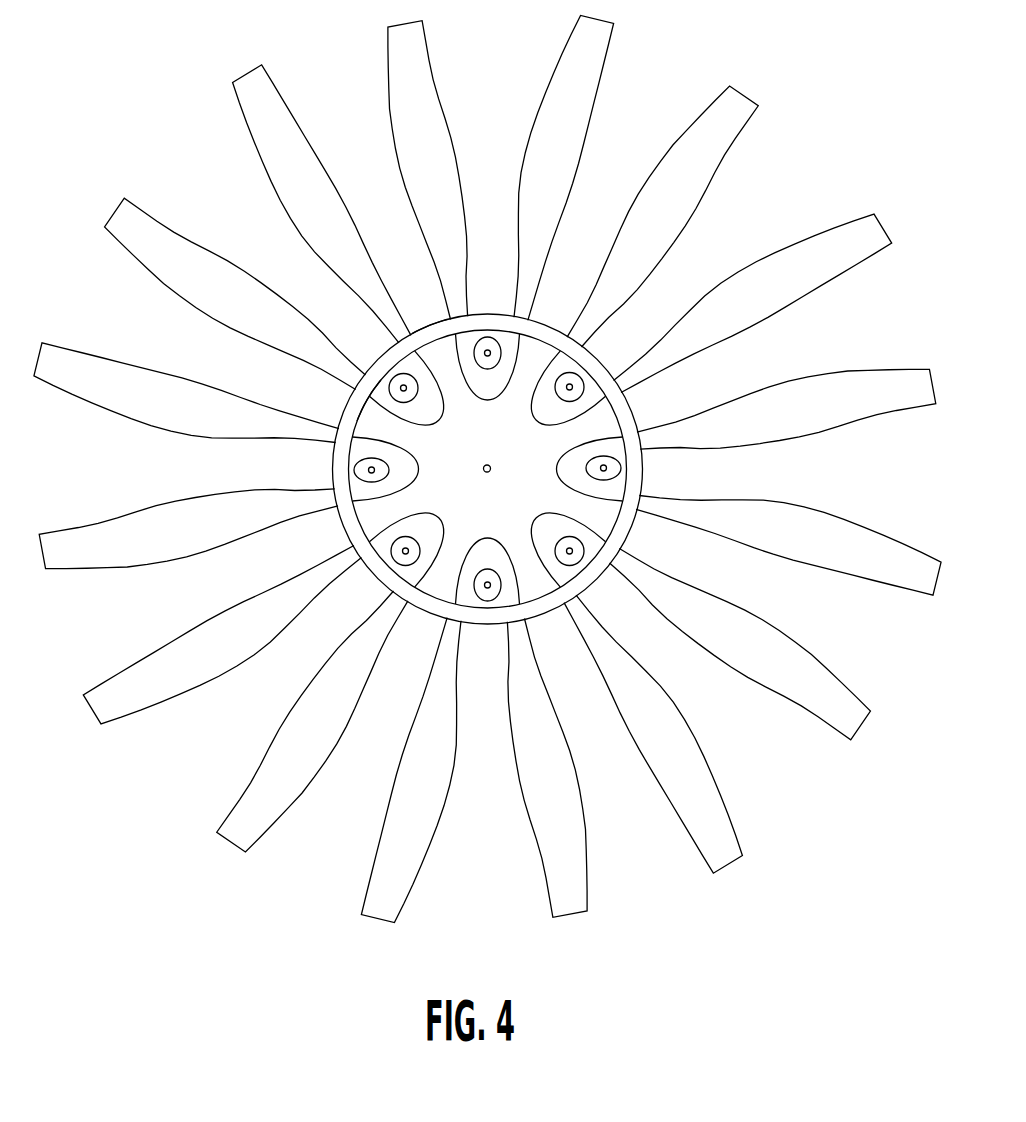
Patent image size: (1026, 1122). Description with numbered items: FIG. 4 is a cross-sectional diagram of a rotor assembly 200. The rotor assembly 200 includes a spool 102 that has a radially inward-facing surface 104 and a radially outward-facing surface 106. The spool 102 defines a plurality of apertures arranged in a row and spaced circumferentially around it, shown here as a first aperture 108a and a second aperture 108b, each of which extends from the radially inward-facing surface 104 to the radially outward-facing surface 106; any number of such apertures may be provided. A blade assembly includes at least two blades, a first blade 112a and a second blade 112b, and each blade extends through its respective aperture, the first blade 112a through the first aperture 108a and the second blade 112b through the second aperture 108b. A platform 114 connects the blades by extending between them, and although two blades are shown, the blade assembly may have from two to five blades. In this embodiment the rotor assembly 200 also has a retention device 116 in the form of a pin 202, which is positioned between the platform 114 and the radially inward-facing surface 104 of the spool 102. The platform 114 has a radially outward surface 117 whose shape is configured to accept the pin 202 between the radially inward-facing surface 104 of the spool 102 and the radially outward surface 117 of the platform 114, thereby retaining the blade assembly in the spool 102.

The rotor assembly 200 is at (810, 126).
The spool 102 is at (440, 469).
The radially inward-facing surface 104 is at (359, 514).
The radially outward-facing surface 106 is at (337, 526).
The first aperture 108a is at (369, 404).
The second aperture 108b is at (413, 316).
The first blade 112a is at (156, 235).
The second blade 112b is at (257, 108).
The platform 114 is at (432, 406).
The retention device 116 is at (602, 452).
The radially outward surface 117 is at (587, 382).
The pin 202 is at (397, 378).